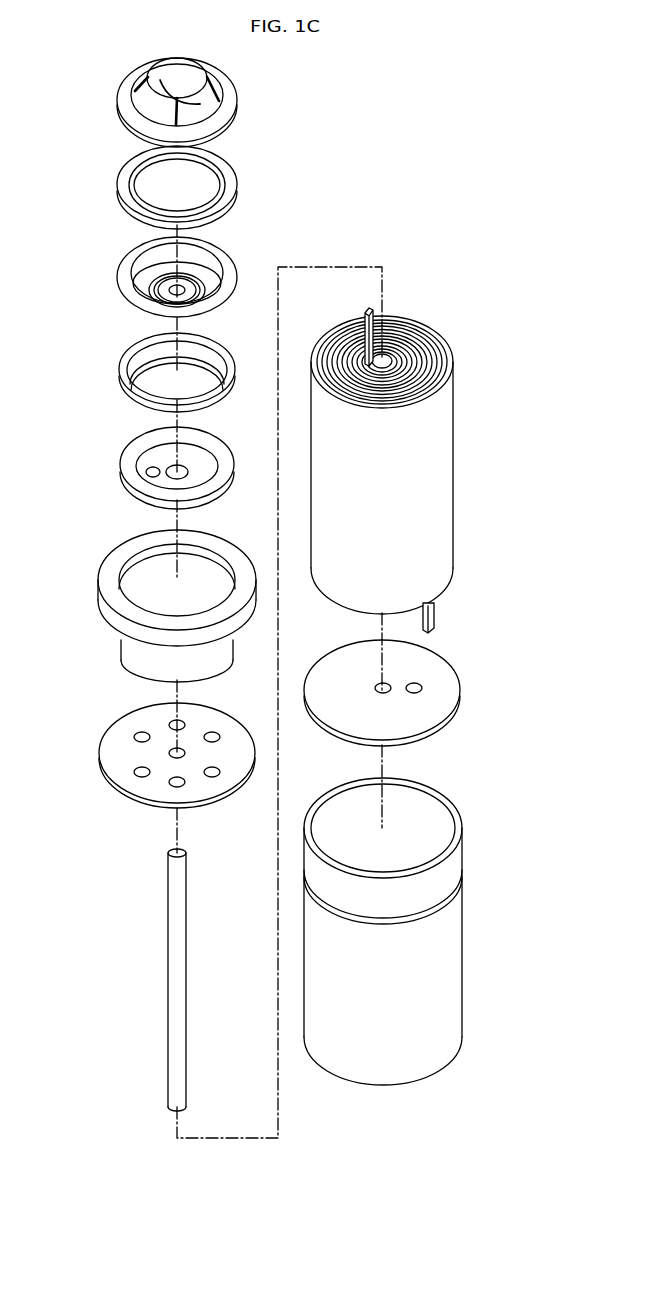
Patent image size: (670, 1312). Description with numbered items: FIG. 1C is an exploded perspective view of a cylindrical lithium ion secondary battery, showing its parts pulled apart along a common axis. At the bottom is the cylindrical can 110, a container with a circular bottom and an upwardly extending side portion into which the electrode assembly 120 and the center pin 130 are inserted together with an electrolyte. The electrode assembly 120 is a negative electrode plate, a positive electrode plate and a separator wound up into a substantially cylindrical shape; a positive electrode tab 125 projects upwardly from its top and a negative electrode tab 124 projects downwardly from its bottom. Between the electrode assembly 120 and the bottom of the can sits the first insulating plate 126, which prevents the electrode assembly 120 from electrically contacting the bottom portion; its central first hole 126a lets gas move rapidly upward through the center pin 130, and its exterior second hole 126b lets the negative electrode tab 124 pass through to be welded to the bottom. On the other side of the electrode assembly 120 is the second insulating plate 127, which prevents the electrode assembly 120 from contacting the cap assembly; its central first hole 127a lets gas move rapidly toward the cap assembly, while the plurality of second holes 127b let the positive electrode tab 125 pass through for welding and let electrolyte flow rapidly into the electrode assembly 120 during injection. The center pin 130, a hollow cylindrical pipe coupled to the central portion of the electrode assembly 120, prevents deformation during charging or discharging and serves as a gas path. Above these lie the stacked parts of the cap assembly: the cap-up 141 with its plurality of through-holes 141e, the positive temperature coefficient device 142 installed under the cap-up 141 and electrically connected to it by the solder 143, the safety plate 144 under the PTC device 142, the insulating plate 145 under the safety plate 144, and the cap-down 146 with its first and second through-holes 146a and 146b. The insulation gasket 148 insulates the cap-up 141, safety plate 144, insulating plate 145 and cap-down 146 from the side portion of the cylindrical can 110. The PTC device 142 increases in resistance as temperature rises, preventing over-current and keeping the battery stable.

The cylindrical can 110 is at (453, 963).
The electrode assembly 120 is at (443, 468).
The negative electrode tab 124 is at (433, 612).
The positive electrode tab 125 is at (367, 311).
The first insulating plate 126 is at (440, 708).
The first hole of first insulating plate 126a is at (390, 684).
The second hole of first insulating plate 126b is at (421, 686).
The second insulating plate 127 is at (108, 748).
The first hole of second insulating plate 127a is at (177, 748).
The second holes of second insulating plate 127b is at (213, 774).
The center pin 130 is at (172, 965).
The cap-up 141 is at (122, 93).
The through-holes of cap-up 141e is at (181, 108).
The positive temperature coefficient (PTC) device 142 is at (118, 184).
The solder 143 is at (228, 185).
The safety plate 144 is at (121, 272).
The insulating plate 145 is at (121, 366).
The cap-down 146 is at (131, 473).
The first through-hole of cap-down 146a is at (174, 466).
The second through-hole of cap-down 146b is at (149, 467).
The insulation gasket 148 is at (100, 602).